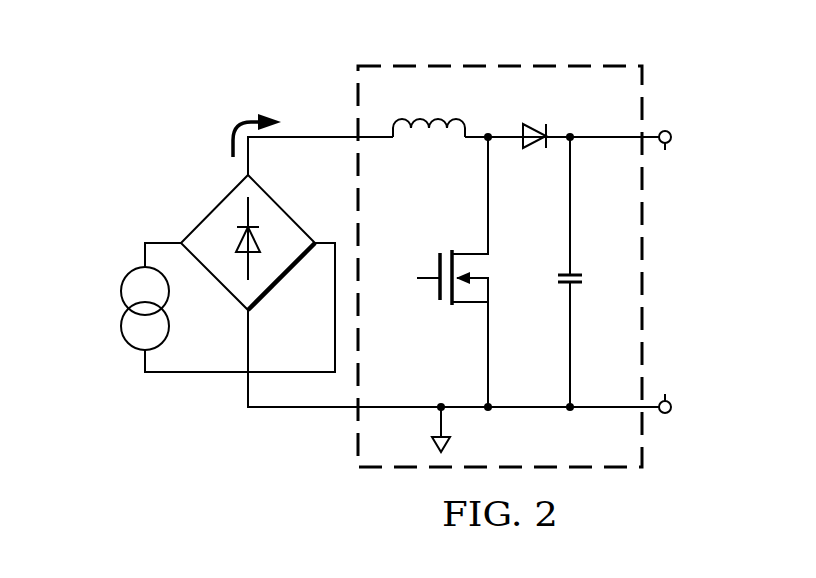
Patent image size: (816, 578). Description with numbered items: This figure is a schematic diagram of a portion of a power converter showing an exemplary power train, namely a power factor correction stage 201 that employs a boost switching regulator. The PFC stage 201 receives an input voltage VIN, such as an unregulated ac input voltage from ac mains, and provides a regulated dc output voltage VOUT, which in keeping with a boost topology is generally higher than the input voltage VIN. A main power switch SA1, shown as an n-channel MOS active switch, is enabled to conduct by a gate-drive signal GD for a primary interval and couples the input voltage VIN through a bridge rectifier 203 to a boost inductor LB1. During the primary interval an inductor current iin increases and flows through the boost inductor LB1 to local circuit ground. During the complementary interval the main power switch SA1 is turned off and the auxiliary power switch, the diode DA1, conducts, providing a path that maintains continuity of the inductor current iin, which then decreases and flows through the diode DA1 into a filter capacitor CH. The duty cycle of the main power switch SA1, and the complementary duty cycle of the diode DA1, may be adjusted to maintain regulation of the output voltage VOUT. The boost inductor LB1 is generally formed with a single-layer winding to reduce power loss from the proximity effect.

The power factor correction stage 201 is at (500, 233).
The bridge rectifier 203 is at (212, 207).
The boost inductor LB1 is at (429, 110).
The diode DA1 is at (537, 116).
The main power switch SA1 is at (491, 272).
The filter capacitor CH is at (590, 272).
The gate-drive signal GD is at (407, 280).
The input voltage VIN is at (123, 308).
The output voltage VOUT is at (681, 271).
The inductor current iin is at (236, 132).